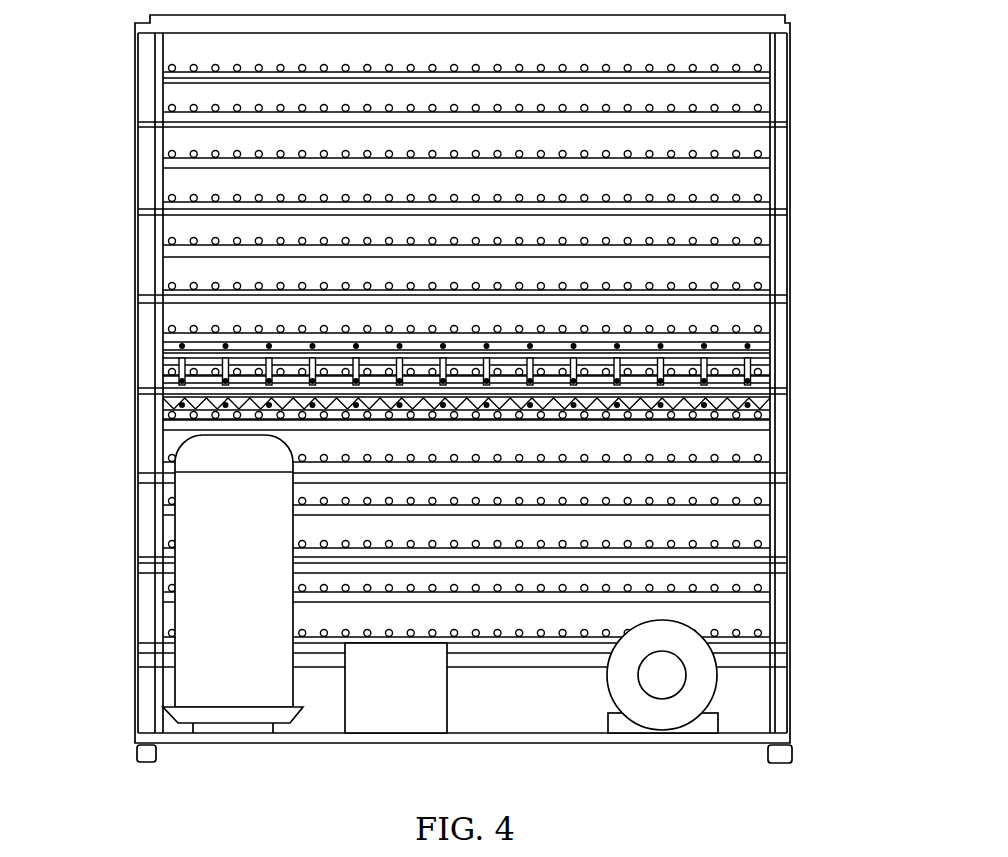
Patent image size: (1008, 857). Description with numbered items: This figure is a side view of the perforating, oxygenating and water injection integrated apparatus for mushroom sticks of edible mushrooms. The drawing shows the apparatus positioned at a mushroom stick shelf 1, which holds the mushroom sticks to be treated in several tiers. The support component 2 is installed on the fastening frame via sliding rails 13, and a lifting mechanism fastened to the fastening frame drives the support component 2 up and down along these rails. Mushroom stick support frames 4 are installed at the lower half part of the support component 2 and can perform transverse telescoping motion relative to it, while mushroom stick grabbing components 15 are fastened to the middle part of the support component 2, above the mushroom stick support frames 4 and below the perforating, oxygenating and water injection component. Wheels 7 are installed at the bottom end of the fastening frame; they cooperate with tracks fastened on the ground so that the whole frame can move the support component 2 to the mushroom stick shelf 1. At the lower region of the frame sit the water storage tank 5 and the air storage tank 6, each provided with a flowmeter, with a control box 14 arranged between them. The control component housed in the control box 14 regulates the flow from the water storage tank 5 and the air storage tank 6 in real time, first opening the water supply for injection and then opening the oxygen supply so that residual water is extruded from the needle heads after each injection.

The mushroom stick shelf 1 is at (163, 68).
The support component 2 is at (155, 358).
The mushroom stick support frame 4 is at (165, 415).
The water storage tank 5 is at (200, 583).
The air storage tank 6 is at (662, 672).
The wheel 7 is at (793, 752).
The sliding rail 13 is at (783, 73).
The control box 14 is at (393, 687).
The mushroom stick grabbing component 15 is at (770, 400).